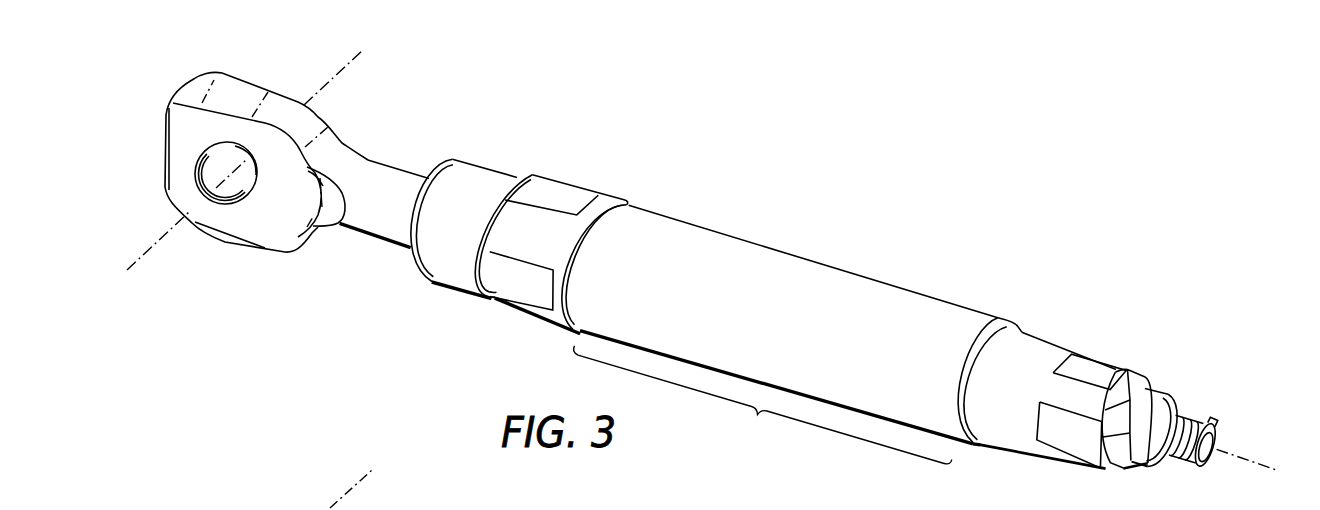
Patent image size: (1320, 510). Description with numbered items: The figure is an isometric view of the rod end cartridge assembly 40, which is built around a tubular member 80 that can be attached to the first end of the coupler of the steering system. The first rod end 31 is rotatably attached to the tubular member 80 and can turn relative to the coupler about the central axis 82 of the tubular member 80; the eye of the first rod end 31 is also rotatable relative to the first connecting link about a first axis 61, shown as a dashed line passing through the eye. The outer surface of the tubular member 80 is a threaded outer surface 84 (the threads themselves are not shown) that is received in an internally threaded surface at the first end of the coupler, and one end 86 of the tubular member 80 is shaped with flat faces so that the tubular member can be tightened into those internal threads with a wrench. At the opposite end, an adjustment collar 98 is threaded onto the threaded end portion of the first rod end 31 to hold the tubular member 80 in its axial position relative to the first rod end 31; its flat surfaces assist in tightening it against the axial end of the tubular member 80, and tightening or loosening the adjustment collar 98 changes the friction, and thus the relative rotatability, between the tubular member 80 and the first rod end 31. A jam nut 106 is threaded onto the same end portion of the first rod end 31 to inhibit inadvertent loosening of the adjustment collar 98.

The first rod end 31 is at (398, 177).
The rod end cartridge assembly 40 is at (846, 209).
The first axis 61 is at (357, 60).
The tubular member 80 is at (966, 330).
The central axis 82 is at (1212, 448).
The threaded outer surface 84 is at (757, 410).
The one end of the tubular member 86 is at (565, 195).
The adjustment collar 98 is at (1048, 352).
The jam nut 106 is at (1130, 398).